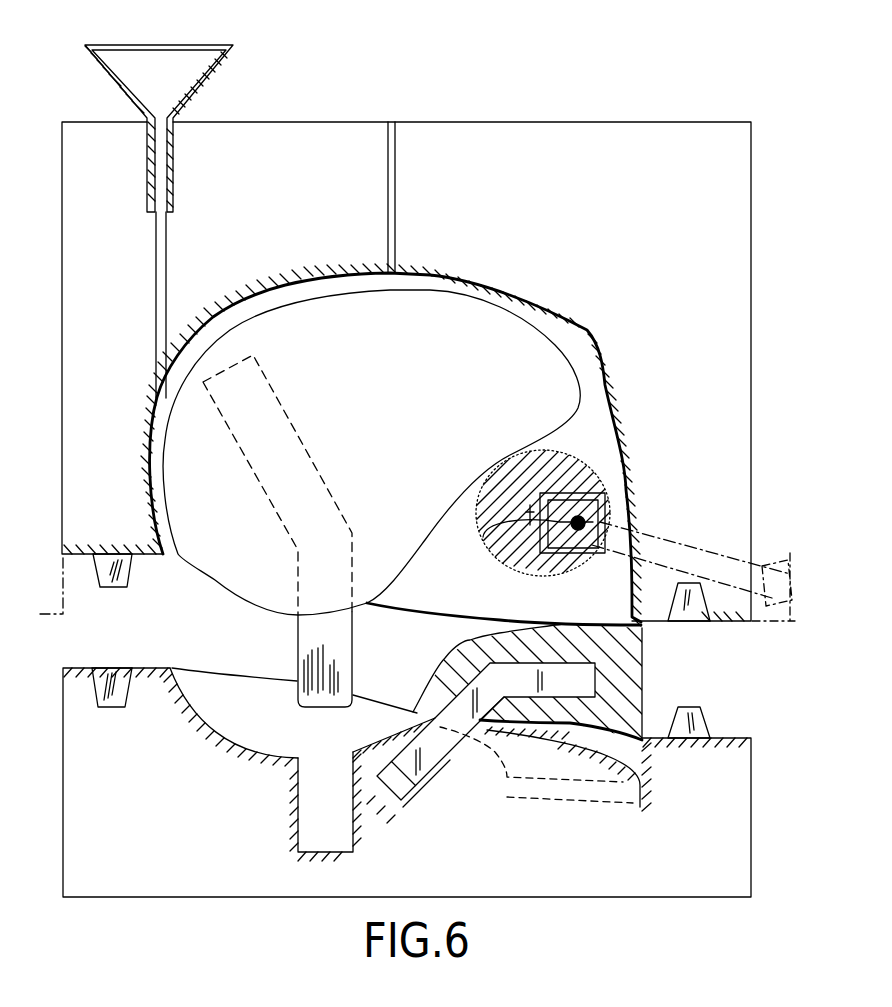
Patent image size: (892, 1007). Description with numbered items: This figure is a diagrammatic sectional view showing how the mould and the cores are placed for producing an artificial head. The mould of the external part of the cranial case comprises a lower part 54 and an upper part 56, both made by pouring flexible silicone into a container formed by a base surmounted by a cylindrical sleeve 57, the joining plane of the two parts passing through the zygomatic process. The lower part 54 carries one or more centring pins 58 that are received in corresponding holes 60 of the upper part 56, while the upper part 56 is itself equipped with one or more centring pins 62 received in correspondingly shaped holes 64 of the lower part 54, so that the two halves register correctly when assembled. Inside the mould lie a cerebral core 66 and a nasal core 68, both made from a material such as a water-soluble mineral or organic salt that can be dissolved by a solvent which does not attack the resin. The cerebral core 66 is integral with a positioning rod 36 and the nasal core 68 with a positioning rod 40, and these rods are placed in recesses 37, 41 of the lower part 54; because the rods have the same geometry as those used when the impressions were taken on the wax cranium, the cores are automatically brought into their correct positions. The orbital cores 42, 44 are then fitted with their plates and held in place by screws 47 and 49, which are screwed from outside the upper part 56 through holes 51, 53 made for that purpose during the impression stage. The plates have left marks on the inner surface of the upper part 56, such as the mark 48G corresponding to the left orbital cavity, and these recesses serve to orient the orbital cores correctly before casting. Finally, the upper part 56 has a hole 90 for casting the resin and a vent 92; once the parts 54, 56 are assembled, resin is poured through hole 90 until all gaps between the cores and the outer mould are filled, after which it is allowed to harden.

The positioning rod 36 is at (307, 646).
The recess 37 is at (305, 818).
The positioning rod 40 is at (423, 767).
The recess 41 is at (400, 790).
The orbital core 42 is at (549, 469).
The orbital core 44 is at (533, 457).
The screw 47 is at (691, 528).
The mark 48G is at (557, 507).
The screw 49 is at (703, 512).
The hole 51 is at (509, 555).
The hole 53 is at (483, 537).
The lower part of the mould 54 is at (84, 894).
The upper part of the mould 56 is at (200, 137).
The cylindrical sleeve 57 is at (773, 606).
The centring pin 58 is at (706, 722).
The hole 60 is at (697, 607).
The centring pin 62 is at (105, 570).
The hole 64 is at (122, 675).
The cerebral core 66 is at (373, 322).
The nasal core 68 is at (628, 685).
The hole for casting the resin 90 is at (167, 247).
The vent 92 is at (388, 150).